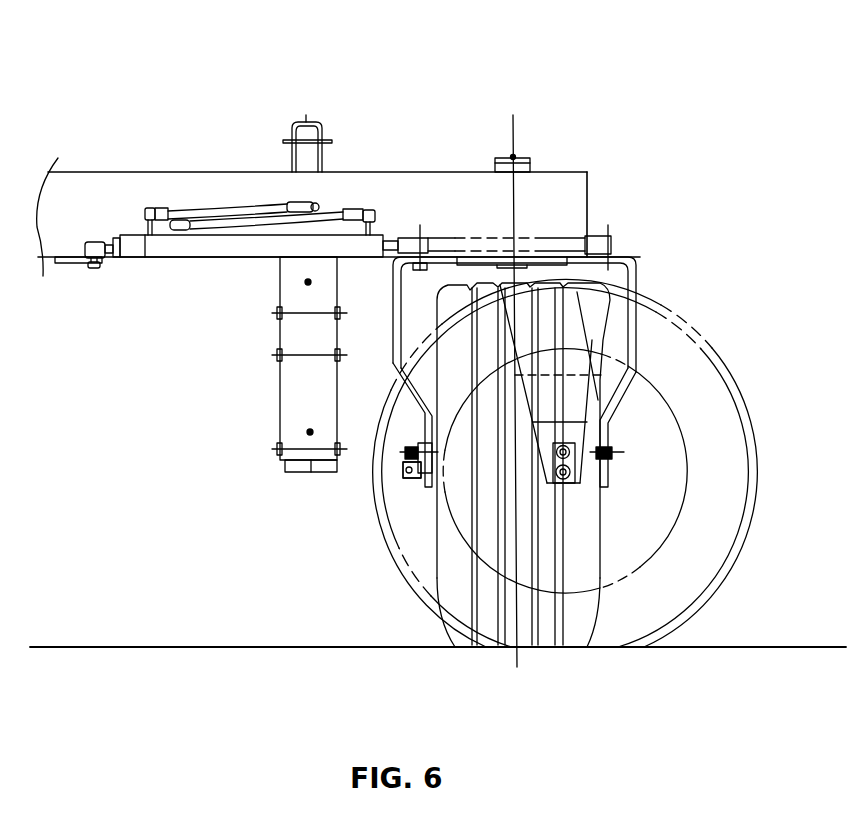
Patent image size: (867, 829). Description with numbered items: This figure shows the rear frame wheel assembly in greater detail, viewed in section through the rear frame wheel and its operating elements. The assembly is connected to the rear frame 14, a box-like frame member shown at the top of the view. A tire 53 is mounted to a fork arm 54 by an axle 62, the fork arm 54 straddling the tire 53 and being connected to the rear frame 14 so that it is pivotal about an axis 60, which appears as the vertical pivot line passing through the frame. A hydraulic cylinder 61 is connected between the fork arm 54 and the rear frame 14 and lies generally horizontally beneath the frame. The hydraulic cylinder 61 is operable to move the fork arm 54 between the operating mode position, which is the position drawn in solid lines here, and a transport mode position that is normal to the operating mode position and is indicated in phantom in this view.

The rear frame 14 is at (587, 192).
The tire 53 is at (597, 615).
The fork arm 54 is at (636, 330).
The axis 60 is at (513, 130).
The hydraulic cylinder 61 is at (232, 250).
The axle 62 is at (427, 487).